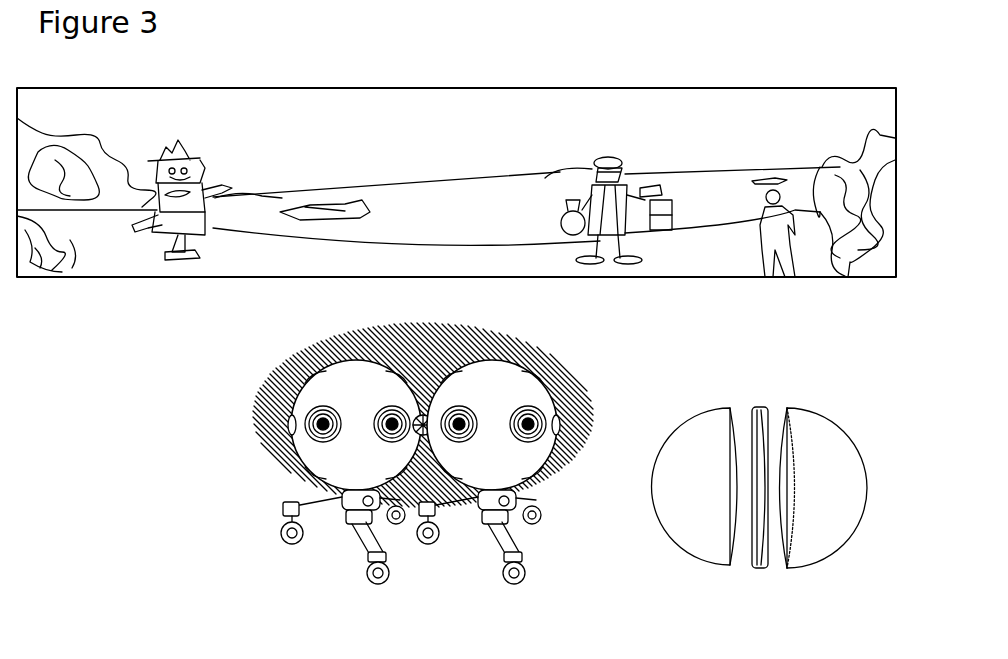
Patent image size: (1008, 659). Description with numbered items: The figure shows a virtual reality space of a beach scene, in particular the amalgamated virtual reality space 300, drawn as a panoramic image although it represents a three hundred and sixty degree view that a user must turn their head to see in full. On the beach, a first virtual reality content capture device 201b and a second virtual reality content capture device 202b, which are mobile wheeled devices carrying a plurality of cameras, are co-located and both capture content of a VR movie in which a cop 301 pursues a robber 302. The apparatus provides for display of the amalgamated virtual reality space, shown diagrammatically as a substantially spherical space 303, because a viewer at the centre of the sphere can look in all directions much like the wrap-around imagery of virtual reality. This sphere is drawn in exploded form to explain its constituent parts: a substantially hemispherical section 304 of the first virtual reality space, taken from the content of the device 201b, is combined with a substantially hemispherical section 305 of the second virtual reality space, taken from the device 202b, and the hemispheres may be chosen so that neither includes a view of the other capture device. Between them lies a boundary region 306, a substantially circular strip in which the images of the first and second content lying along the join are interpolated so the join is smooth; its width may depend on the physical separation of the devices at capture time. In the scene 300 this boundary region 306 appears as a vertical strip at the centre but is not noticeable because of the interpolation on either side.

The amalgamated virtual reality space 300 is at (287, 88).
The cop 301 is at (200, 167).
The robber 302 is at (613, 157).
The first virtual reality content capture device 201b is at (308, 453).
The second virtual reality content capture device 202b is at (547, 448).
The amalgamated virtual reality space 303 is at (762, 390).
The hemispherical section of the first virtual reality space 304 is at (708, 560).
The hemispherical section of the second virtual reality space 305 is at (830, 553).
The boundary region 306 is at (759, 568).